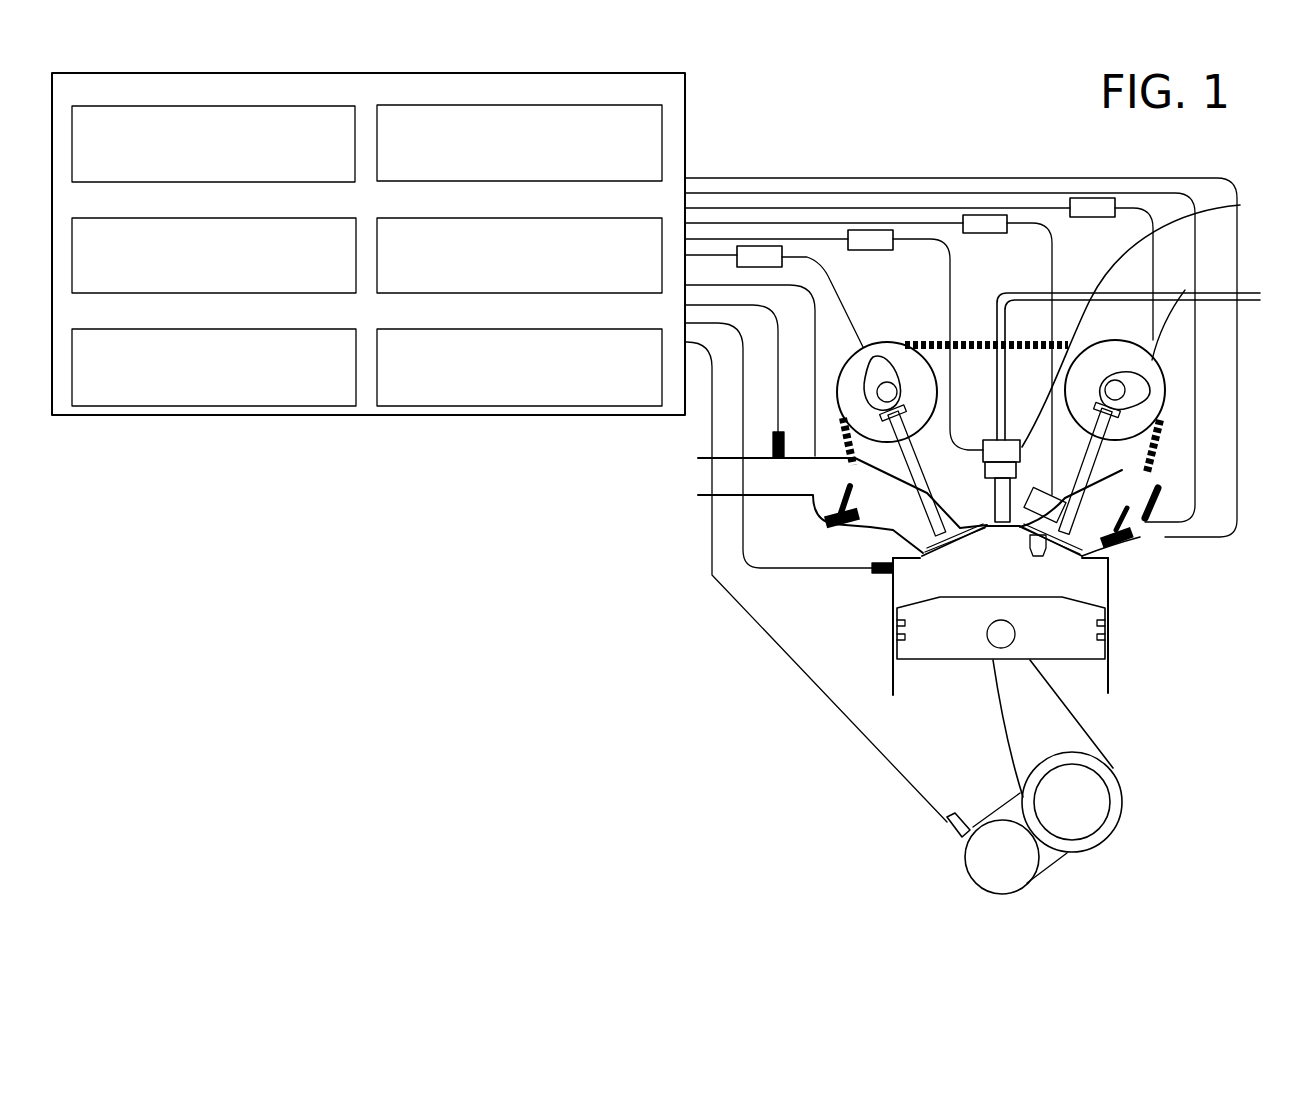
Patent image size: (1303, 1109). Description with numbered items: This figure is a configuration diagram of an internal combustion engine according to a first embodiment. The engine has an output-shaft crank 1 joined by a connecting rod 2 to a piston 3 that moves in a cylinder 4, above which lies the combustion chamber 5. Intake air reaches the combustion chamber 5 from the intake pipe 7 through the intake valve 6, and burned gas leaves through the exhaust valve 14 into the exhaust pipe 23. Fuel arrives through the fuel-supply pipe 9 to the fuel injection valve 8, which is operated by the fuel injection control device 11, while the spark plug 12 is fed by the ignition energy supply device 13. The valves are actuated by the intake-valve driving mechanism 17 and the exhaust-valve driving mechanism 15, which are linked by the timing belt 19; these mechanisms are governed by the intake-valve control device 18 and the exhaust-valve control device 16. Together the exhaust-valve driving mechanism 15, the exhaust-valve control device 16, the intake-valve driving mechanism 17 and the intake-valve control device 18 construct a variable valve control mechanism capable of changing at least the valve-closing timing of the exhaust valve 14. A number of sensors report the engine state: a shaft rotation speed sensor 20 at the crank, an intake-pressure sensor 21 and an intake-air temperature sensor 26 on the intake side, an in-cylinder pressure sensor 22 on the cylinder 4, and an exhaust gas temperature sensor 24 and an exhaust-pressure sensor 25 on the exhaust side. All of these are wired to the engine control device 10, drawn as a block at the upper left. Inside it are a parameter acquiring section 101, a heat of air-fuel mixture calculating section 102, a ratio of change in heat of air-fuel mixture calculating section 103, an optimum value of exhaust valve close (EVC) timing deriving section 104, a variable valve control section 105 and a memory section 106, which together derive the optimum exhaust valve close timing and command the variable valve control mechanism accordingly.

The output-shaft crank 1 is at (1023, 870).
The connecting rod 2 is at (1052, 737).
The piston 3 is at (1090, 650).
The cylinder 4 is at (1110, 600).
The combustion chamber 5 is at (1090, 588).
The intake valve 6 is at (890, 616).
The intake pipe 7 is at (717, 478).
The fuel injection valve 8 is at (1240, 205).
The fuel-supply pipe 9 is at (1185, 290).
The engine control device 10 is at (632, 415).
The fuel injection control device 11 is at (870, 231).
The spark plug 12 is at (1047, 548).
The ignition energy supply device 13 is at (973, 215).
The exhaust valve 14 is at (1050, 557).
The exhaust-valve driving mechanism 15 is at (1160, 297).
The exhaust-valve control device 16 is at (1097, 198).
The intake-valve driving mechanism 17 is at (897, 347).
The intake-valve control device 18 is at (760, 247).
The timing belt 19 is at (1163, 427).
The shaft rotation speed sensor 20 is at (945, 823).
The intake-pressure sensor 21 is at (773, 443).
The in-cylinder pressure sensor 22 is at (893, 558).
The exhaust pipe 23 is at (1130, 483).
The exhaust gas temperature sensor 24 is at (1110, 537).
The exhaust-pressure sensor 25 is at (1080, 547).
The intake-air temperature sensor 26 is at (865, 530).
The parameter acquiring section 101 is at (288, 103).
The heat of air-fuel mixture calculating section 102 is at (288, 214).
The ratio of change in heat of air-fuel mixture calculating section 103 is at (288, 326).
The optimum value of exhaust valve close (EVC) timing deriving section 104 is at (594, 103).
The variable valve control section 105 is at (594, 214).
The memory section 106 is at (594, 326).